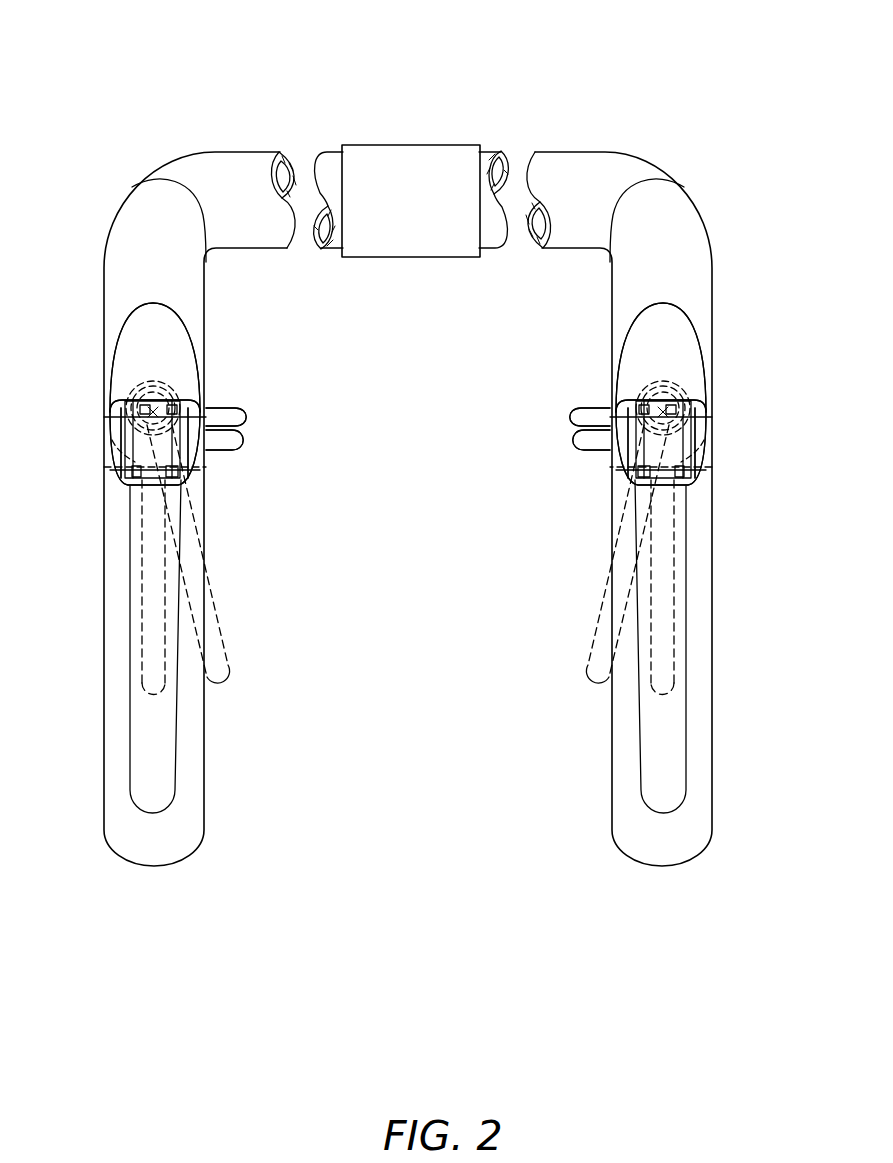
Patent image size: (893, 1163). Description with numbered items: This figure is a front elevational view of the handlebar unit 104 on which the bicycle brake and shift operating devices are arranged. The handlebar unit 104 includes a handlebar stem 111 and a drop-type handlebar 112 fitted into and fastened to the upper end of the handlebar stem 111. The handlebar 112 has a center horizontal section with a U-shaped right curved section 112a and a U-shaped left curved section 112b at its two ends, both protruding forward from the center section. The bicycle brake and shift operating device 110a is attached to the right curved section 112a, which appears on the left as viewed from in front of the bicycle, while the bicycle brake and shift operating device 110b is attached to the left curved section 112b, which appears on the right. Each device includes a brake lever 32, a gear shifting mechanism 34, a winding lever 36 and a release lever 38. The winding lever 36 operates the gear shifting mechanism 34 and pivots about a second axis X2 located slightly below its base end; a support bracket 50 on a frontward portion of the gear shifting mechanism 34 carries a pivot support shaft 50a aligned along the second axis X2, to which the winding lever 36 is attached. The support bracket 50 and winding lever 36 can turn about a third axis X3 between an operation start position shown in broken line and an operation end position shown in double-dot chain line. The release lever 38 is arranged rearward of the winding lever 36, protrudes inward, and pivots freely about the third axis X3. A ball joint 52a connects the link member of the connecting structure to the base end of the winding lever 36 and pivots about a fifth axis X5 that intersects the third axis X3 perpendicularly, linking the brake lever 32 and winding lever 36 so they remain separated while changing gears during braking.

The brake lever 32 is at (176, 740).
The gear shifting mechanism 34 is at (172, 395).
The winding lever 36 is at (167, 633).
The release lever 38 is at (232, 408).
The support bracket 50 is at (222, 425).
The pivot support shaft 50a is at (128, 485).
The ball joint 52a is at (176, 410).
The handlebar unit 104 is at (352, 120).
The bicycle brake and shift operating device 110a is at (228, 500).
The bicycle brake and shift operating device 110b is at (578, 492).
The handlebar stem 111 is at (397, 153).
The handlebar 112 is at (248, 142).
The right curved section 112a is at (155, 222).
The left curved section 112b is at (652, 225).
The second axis X2 is at (118, 460).
The third axis X3 is at (125, 398).
The fifth axis X5 is at (130, 405).